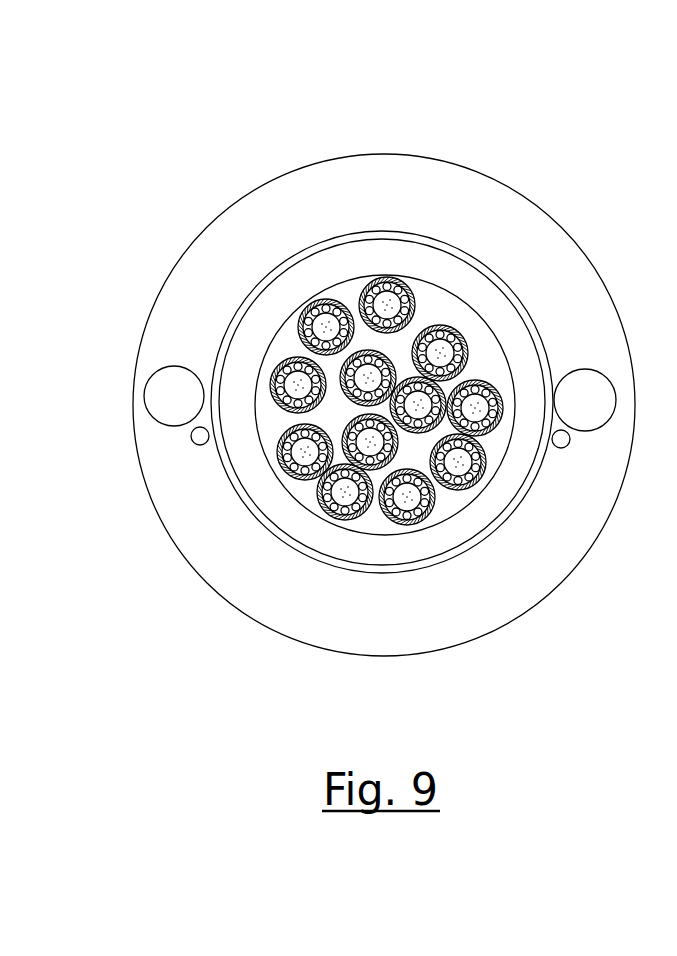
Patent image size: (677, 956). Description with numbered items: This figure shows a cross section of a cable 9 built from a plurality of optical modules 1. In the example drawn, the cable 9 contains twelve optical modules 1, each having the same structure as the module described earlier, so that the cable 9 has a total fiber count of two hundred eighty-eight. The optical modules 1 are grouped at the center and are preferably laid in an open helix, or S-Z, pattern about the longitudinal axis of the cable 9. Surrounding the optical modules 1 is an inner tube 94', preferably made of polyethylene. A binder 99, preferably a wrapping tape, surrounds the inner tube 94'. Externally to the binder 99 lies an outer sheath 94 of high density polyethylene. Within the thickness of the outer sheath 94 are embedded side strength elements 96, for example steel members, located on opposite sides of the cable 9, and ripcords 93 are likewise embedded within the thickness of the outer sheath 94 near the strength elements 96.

The cable 9 is at (252, 147).
The outer sheath 94 is at (384, 372).
The binder 99 is at (488, 265).
The inner tube 94' is at (429, 375).
The side strength elements 96 is at (153, 373).
The ripcords 93 is at (195, 446).
The optical module 1 is at (410, 284).